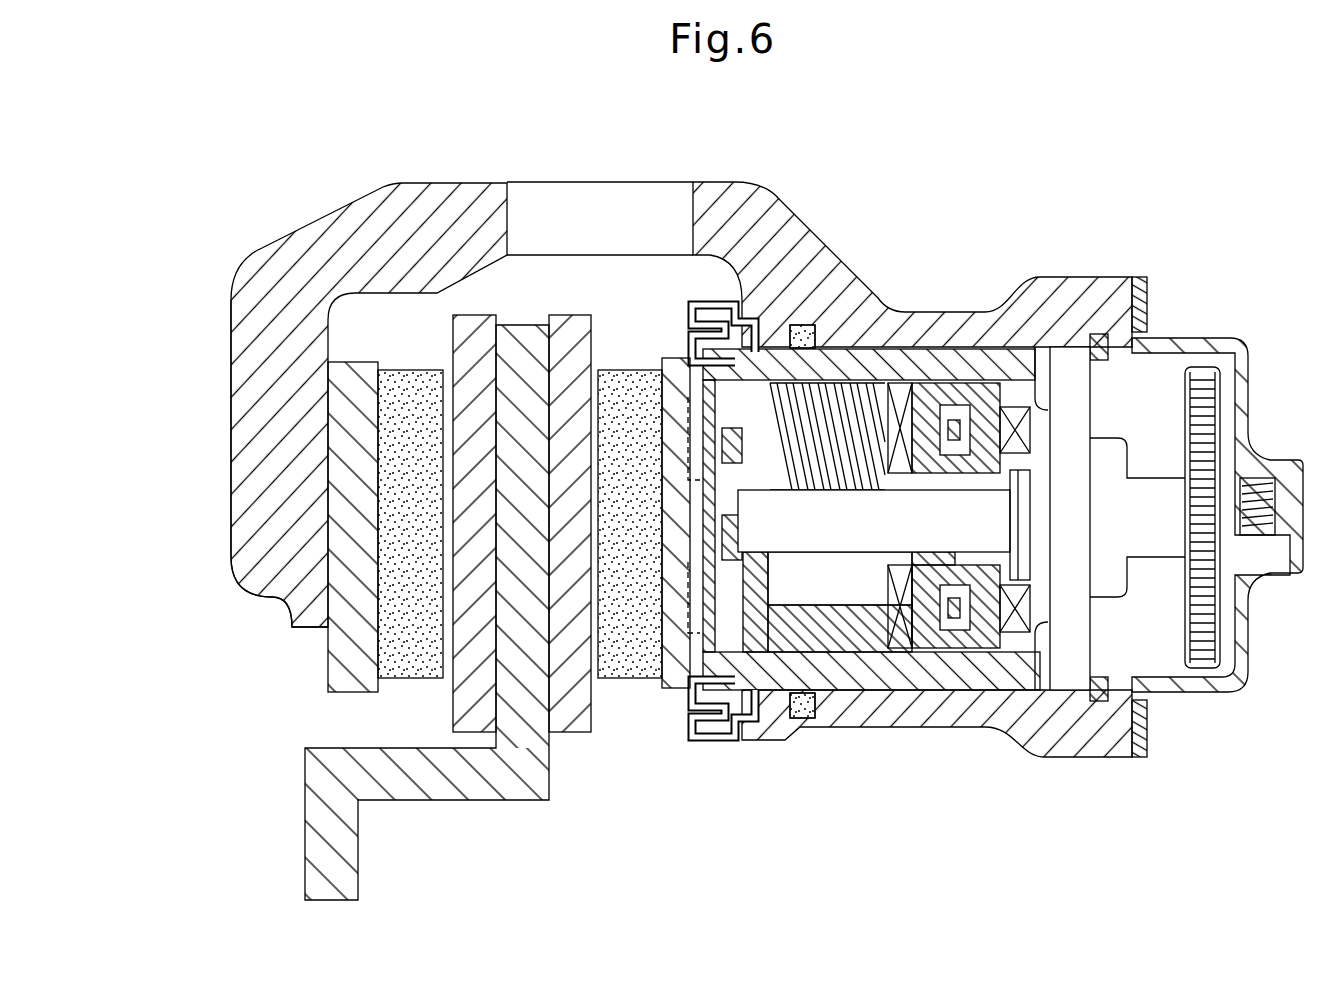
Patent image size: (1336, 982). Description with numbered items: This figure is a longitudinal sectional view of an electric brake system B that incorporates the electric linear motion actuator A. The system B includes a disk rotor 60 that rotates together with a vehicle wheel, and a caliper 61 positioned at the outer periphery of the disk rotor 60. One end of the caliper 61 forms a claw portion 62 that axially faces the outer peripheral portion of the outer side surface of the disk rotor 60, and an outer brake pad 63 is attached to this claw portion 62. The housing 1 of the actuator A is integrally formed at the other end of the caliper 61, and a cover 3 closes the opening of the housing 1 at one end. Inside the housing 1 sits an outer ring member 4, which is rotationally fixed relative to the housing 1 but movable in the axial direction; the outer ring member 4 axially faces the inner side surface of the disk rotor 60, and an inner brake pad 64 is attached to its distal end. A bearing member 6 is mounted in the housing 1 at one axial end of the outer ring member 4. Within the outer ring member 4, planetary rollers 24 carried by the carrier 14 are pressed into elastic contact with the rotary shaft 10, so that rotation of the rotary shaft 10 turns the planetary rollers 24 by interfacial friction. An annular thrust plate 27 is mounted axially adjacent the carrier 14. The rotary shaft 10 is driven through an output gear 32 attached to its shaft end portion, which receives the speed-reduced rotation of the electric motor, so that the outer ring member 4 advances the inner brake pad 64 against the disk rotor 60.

The housing 1 is at (945, 325).
The cover 3 is at (1245, 400).
The outer ring member 4 is at (905, 365).
The bearing member 6 is at (1065, 360).
The rotary shaft 10 is at (822, 537).
The carrier 14 is at (850, 657).
The planetary roller 24 is at (848, 373).
The thrust plate 27 is at (985, 400).
The output gear 32 is at (1210, 628).
The disk rotor 60 is at (535, 742).
The caliper 61 is at (285, 255).
The claw portion 62 is at (245, 500).
The outer brake pad 63 is at (393, 417).
The inner brake pad 64 is at (631, 655).
The electric linear motion actuator A is at (1215, 338).
The electric brake system B is at (345, 196).